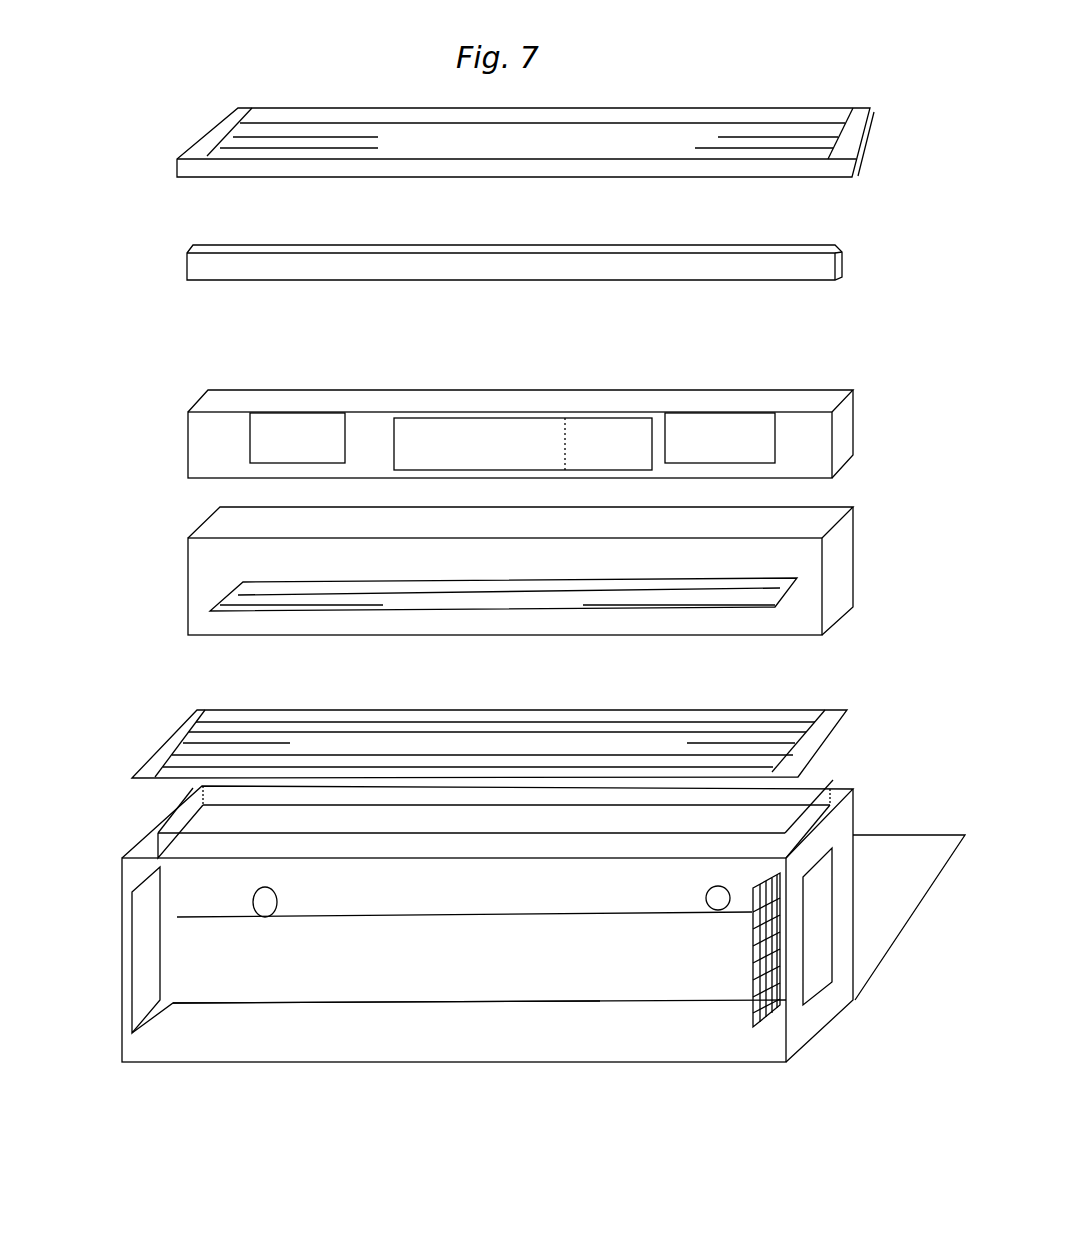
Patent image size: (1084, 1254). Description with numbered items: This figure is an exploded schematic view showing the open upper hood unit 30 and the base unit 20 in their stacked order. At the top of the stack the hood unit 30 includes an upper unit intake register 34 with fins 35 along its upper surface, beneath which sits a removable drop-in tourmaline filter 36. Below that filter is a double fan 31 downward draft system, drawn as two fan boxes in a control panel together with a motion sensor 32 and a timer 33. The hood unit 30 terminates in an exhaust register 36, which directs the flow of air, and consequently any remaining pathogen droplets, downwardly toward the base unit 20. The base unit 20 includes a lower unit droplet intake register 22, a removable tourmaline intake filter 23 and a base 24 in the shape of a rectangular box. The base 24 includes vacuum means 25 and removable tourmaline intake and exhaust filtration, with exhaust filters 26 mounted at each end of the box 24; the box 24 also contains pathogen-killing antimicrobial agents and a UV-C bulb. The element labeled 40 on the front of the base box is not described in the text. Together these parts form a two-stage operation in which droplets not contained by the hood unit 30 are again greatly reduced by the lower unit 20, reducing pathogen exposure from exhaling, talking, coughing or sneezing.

The base unit 20 is at (163, 821).
The lower unit droplet intake register 22 is at (607, 728).
The removable tourmaline intake filter 23 is at (685, 840).
The base 24 is at (223, 923).
The vacuum means 25 is at (197, 902).
The exhaust filters 26 is at (173, 992).
The upper hood unit 30 is at (202, 428).
The double fan 31 is at (260, 447).
The motion sensor 32 is at (467, 422).
The timer 33 is at (578, 418).
The upper unit intake register 34 is at (792, 133).
The fins 35 is at (827, 112).
The tourmaline filter 36 is at (412, 262).
The front panel 40 is at (307, 957).